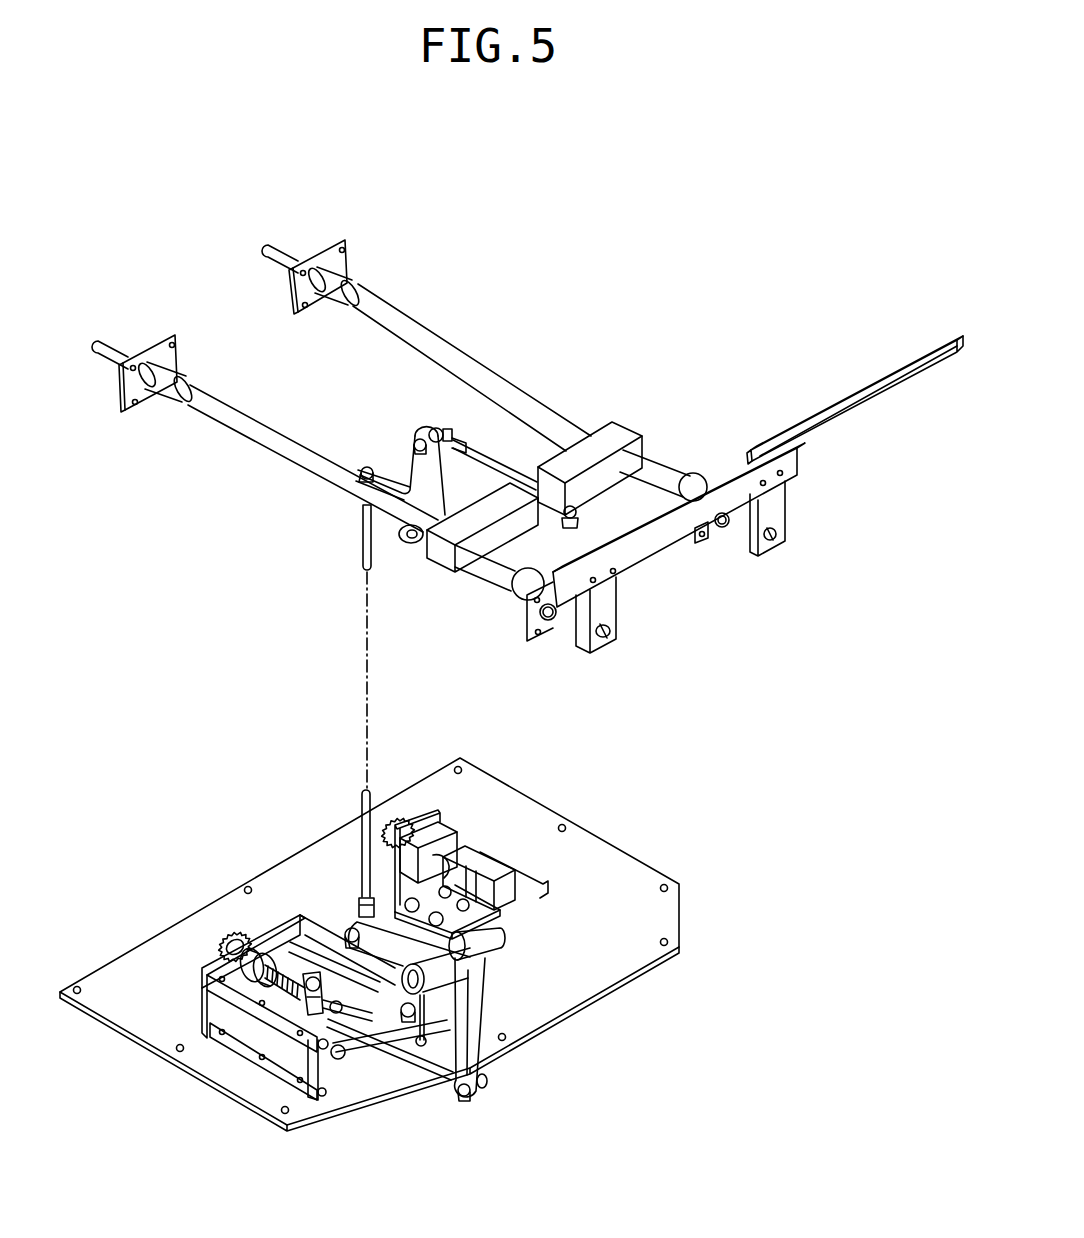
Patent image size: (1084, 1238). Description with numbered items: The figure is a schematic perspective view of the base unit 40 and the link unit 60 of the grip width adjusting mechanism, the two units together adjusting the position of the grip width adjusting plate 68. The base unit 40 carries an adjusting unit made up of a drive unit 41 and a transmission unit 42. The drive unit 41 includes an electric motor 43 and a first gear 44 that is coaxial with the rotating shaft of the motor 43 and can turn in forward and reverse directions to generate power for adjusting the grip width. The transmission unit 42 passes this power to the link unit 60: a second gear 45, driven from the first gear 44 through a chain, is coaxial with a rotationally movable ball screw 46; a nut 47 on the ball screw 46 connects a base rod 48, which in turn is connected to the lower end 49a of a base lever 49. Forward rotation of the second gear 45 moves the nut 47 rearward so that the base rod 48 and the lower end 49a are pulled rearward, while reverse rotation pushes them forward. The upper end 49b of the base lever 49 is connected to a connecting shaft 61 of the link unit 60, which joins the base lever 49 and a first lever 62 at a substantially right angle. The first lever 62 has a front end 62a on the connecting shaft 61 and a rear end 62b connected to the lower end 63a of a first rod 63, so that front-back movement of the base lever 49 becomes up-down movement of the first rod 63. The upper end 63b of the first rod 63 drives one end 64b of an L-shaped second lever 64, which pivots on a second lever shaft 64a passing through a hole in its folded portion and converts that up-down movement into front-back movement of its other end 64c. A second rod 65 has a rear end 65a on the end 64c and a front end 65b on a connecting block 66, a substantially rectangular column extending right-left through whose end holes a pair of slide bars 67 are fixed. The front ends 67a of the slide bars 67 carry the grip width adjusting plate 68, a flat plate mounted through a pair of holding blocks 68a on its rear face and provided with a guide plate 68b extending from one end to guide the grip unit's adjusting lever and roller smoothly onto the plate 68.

The base unit 40 is at (286, 806).
The drive unit 41 is at (450, 820).
The transmission unit 42 is at (200, 970).
The electric motor 43 is at (470, 860).
The first gear 44 is at (393, 810).
The second gear 45 is at (235, 935).
The ball screw 46 is at (270, 985).
The nut 47 is at (307, 1003).
The base rod 48 is at (418, 1058).
The base lever 49 is at (467, 1043).
The lower end of base lever 49a is at (463, 1098).
The upper end of base lever 49b is at (480, 940).
The link unit 60 is at (669, 390).
The connecting shaft 61 is at (418, 1006).
The first lever 62 is at (383, 958).
The front end of first lever 62a is at (435, 974).
The rear end of first lever 62b is at (345, 925).
The first rod 63 is at (360, 801).
The lower end of first rod 63a is at (360, 905).
The upper end of first rod 63b is at (360, 513).
The second lever 64 is at (403, 480).
The second lever shaft 64a is at (408, 545).
The one end of second lever 64b is at (356, 468).
The other end of second lever 64c is at (418, 432).
The second rod 65 is at (490, 465).
The rear end of second rod 65a is at (448, 440).
The front end of second rod 65b is at (581, 517).
The connecting block 66 is at (607, 437).
The slide bar 67 is at (437, 340).
The front end of slide bar 67a is at (612, 635).
The grip width adjusting plate 68 is at (670, 527).
The holding block 68a is at (605, 610).
The guide plate 68b is at (838, 418).